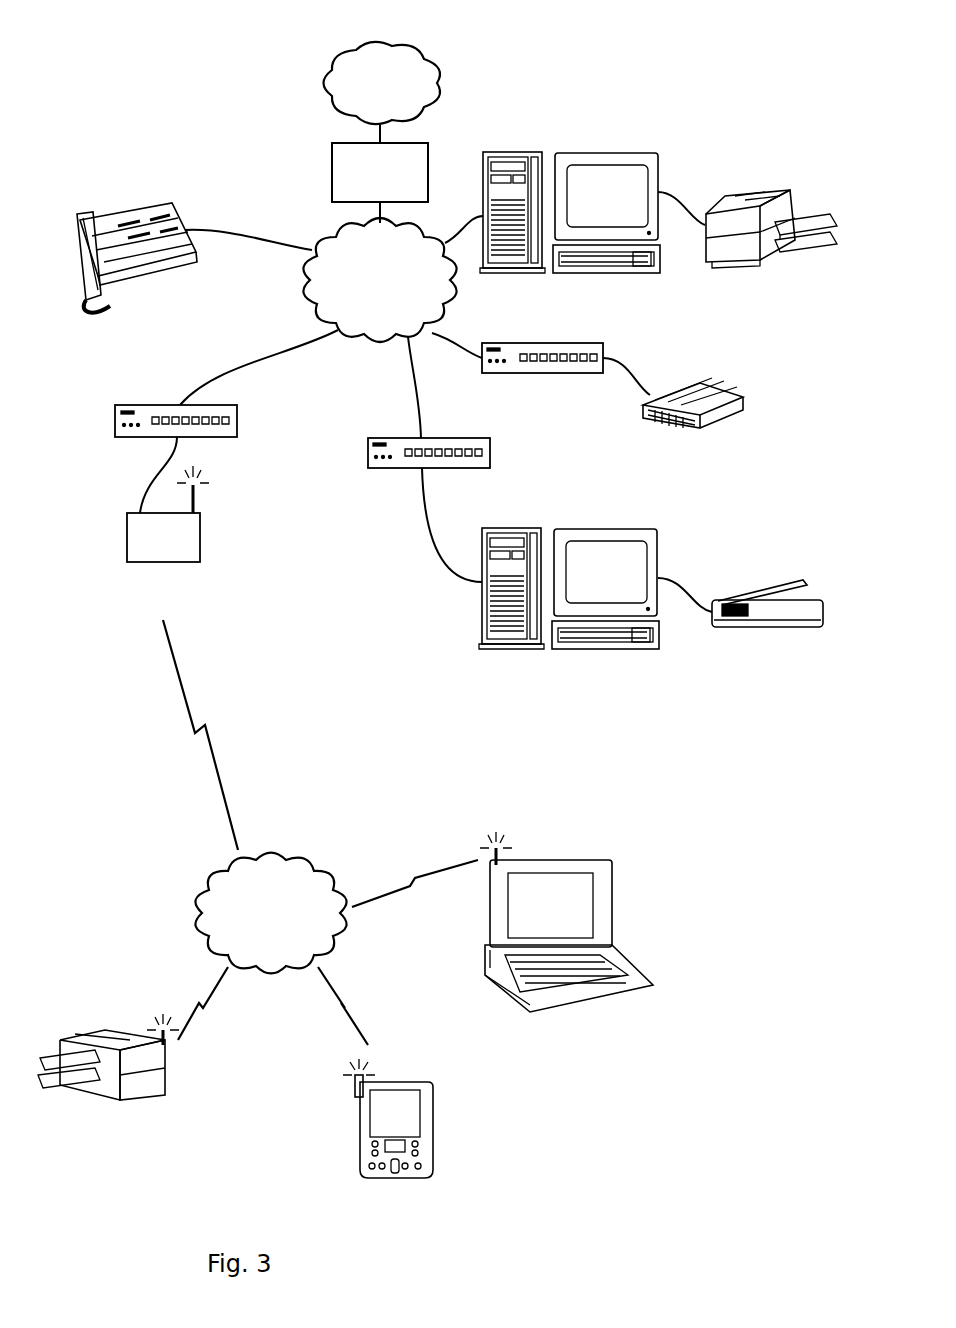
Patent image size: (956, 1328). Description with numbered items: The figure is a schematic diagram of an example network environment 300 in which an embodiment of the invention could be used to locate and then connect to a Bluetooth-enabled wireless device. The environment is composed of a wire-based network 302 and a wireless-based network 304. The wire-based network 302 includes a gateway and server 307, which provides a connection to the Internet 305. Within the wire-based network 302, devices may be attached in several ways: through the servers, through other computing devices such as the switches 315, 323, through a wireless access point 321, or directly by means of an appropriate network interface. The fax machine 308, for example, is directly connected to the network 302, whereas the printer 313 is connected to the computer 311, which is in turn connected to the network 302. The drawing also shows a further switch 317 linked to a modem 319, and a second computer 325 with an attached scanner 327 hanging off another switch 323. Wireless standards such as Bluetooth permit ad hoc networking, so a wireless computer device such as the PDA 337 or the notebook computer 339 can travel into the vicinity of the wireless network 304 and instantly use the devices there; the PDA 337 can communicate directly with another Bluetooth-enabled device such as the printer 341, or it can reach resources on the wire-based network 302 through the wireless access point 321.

The network environment 300 is at (437, 609).
The wire-based network 302 is at (379, 280).
The wireless-based network 304 is at (270, 913).
The Internet 305 is at (412, 81).
The gateway and server 307 is at (359, 159).
The fax machine 308 is at (137, 243).
The computer 311 is at (570, 213).
The printer 313 is at (771, 229).
The switch 315 is at (193, 406).
The switch 317 is at (549, 359).
The modem 319 is at (693, 406).
The wireless access point 321 is at (168, 539).
The switch 323 is at (460, 441).
The computer 325 is at (569, 588).
The scanner 327 is at (767, 608).
The PDA 337 is at (402, 1131).
The notebook computer 339 is at (566, 951).
The printer 341 is at (108, 1070).